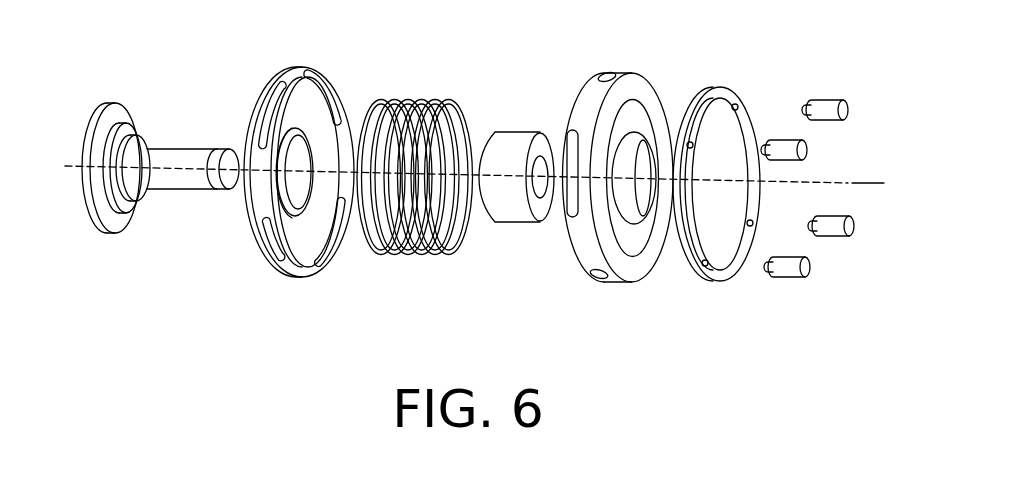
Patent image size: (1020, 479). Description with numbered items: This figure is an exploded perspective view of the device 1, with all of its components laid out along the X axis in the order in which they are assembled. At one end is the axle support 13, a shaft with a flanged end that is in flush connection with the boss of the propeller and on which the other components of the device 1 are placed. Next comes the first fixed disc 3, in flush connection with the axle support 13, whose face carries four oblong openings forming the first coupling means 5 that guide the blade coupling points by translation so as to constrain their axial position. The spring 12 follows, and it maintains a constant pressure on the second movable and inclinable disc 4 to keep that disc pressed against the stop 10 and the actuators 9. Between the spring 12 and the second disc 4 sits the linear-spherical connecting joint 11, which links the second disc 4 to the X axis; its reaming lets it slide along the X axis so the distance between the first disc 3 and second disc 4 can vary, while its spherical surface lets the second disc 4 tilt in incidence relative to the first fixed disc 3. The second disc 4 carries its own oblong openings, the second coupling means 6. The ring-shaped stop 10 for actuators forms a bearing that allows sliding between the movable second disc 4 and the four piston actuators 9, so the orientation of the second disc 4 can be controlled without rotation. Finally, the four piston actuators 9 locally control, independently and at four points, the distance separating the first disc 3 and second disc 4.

The device 1 is at (176, 298).
The first fixed disc 3 is at (297, 159).
The second movable and inclinable disc 4 is at (615, 167).
The first coupling means 5 is at (262, 92).
The second coupling means 6 is at (606, 74).
The piston actuators 9 is at (790, 148).
The stop for actuators 10 is at (726, 92).
The linear-spherical connecting joint 11 is at (514, 133).
The spring 12 is at (412, 100).
The axle support 13 is at (180, 148).
The X axis X is at (858, 183).